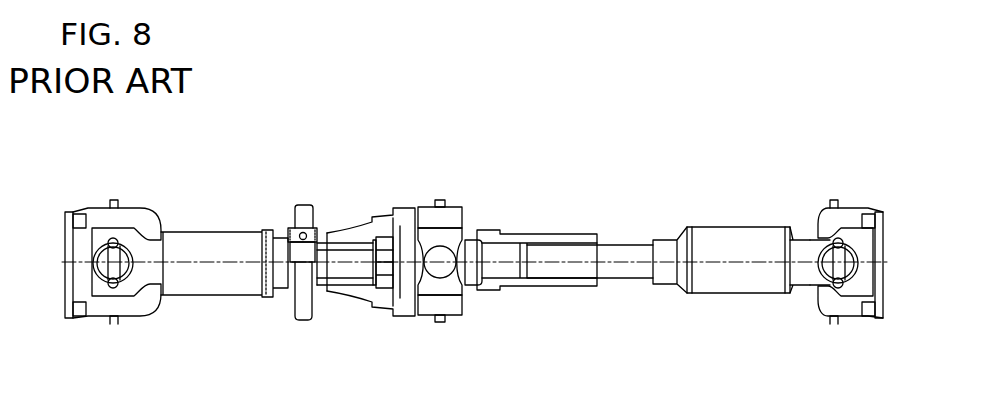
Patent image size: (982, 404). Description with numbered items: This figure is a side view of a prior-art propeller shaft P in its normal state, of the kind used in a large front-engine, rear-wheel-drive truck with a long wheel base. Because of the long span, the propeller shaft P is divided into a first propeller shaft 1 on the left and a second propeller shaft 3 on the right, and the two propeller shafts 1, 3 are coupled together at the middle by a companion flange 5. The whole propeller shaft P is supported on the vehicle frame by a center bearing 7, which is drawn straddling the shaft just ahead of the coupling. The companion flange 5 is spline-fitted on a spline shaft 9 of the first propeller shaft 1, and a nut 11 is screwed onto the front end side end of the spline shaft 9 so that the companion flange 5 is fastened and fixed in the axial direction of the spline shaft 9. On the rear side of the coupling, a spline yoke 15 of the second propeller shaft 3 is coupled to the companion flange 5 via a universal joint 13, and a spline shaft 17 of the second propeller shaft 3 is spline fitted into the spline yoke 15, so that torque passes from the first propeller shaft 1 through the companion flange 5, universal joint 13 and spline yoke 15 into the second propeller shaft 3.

The propeller shaft P is at (268, 178).
The first propeller shaft 1 is at (211, 290).
The second propeller shaft 3 is at (720, 288).
The companion flange 5 is at (372, 224).
The center bearing 7 is at (303, 210).
The spline shaft 9 is at (352, 268).
The nut 11 is at (381, 292).
The universal joint 13 is at (436, 218).
The spline yoke 15 is at (546, 238).
The spline shaft 17 is at (557, 270).